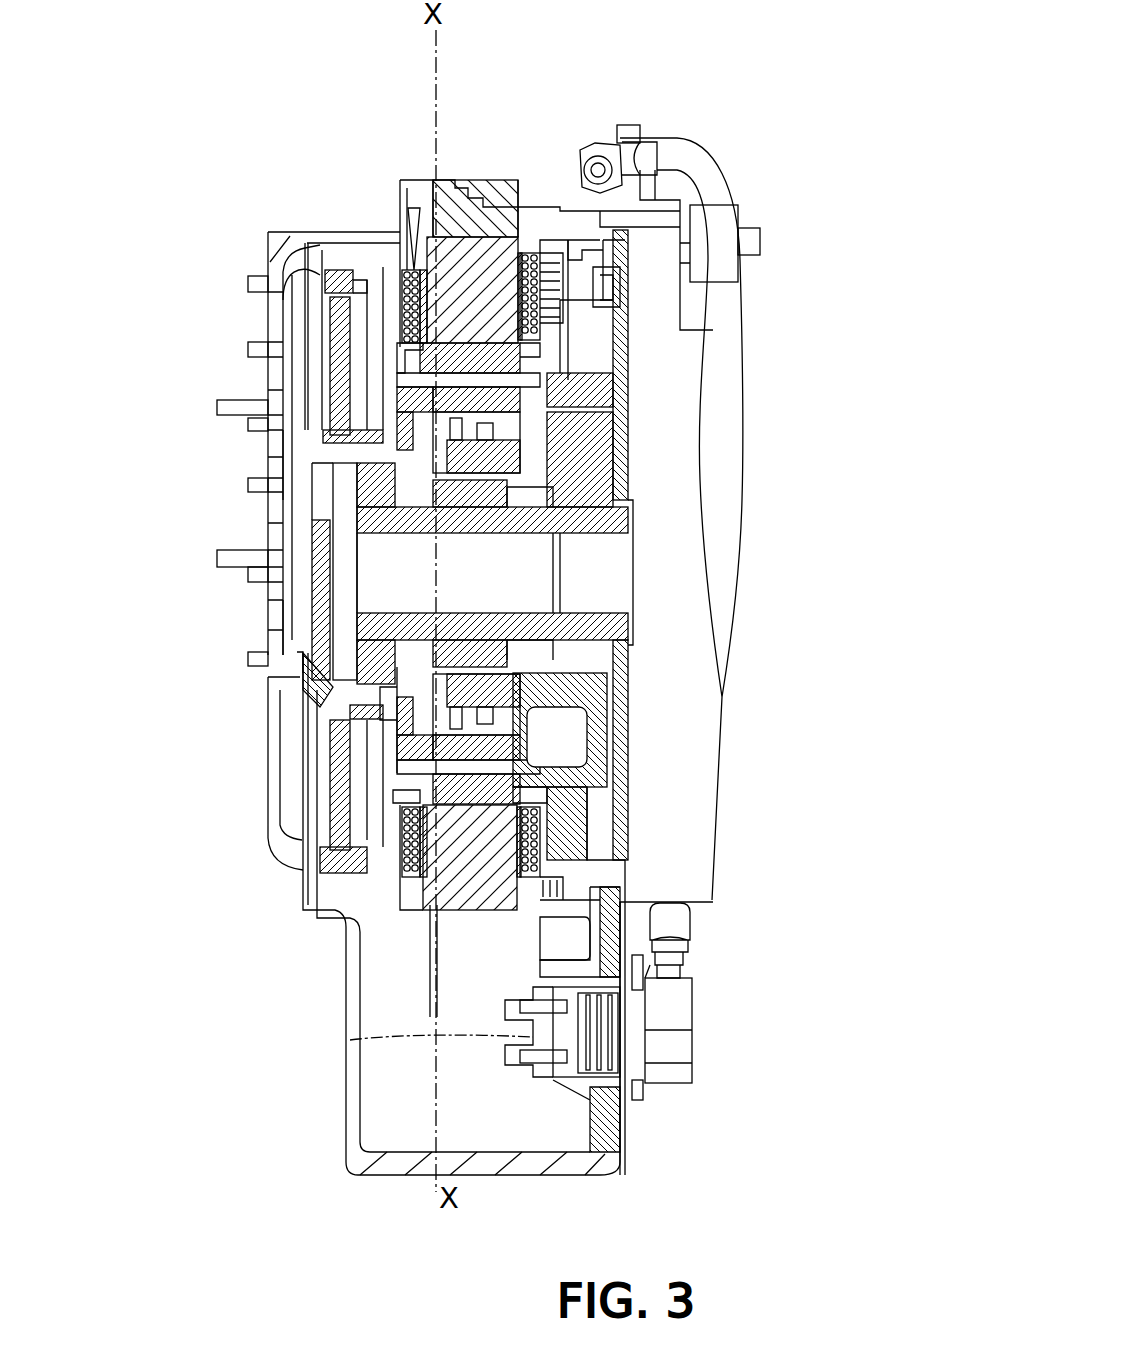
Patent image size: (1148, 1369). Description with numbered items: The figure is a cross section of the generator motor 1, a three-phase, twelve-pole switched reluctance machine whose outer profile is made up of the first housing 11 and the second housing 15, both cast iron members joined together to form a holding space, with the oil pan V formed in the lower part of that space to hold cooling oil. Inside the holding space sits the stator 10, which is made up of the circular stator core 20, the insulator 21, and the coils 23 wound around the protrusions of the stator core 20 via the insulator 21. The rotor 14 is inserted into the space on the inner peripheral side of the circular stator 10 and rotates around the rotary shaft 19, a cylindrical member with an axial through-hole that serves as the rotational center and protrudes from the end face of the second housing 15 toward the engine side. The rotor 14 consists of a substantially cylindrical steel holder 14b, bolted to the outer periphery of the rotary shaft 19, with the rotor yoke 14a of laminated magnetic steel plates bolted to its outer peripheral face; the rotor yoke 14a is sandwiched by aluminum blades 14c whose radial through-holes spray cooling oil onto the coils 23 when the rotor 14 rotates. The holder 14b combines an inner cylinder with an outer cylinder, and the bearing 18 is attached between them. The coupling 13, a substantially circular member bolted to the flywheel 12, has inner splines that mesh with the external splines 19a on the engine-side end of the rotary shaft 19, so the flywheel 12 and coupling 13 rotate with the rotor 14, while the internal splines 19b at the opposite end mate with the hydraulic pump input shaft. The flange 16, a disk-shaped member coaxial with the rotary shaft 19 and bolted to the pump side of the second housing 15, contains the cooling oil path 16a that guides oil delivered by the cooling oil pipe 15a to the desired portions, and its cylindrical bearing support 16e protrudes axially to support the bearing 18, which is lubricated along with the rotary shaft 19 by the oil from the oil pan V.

The generator motor 1 is at (343, 92).
The stator 10 is at (481, 228).
The first housing 11 is at (266, 222).
The flywheel 12 is at (346, 262).
The coupling 13 is at (381, 416).
The rotor 14 is at (457, 330).
The rotor yoke 14a is at (395, 366).
The holder 14b is at (322, 712).
The blades 14c is at (395, 343).
The second housing 15 is at (538, 200).
The cooling oil pipe 15a is at (703, 182).
The flange 16 is at (634, 432).
The cooling oil path 16a is at (617, 375).
The bearing support 16e is at (335, 447).
The bearing 18 is at (455, 447).
The rotary shaft 19 is at (636, 523).
The external splines 19a is at (335, 498).
The internal splines 19b is at (590, 597).
The stator core 20 is at (487, 858).
The insulator 21 is at (576, 268).
The coils 23 is at (418, 262).
The oil pan V is at (413, 1088).